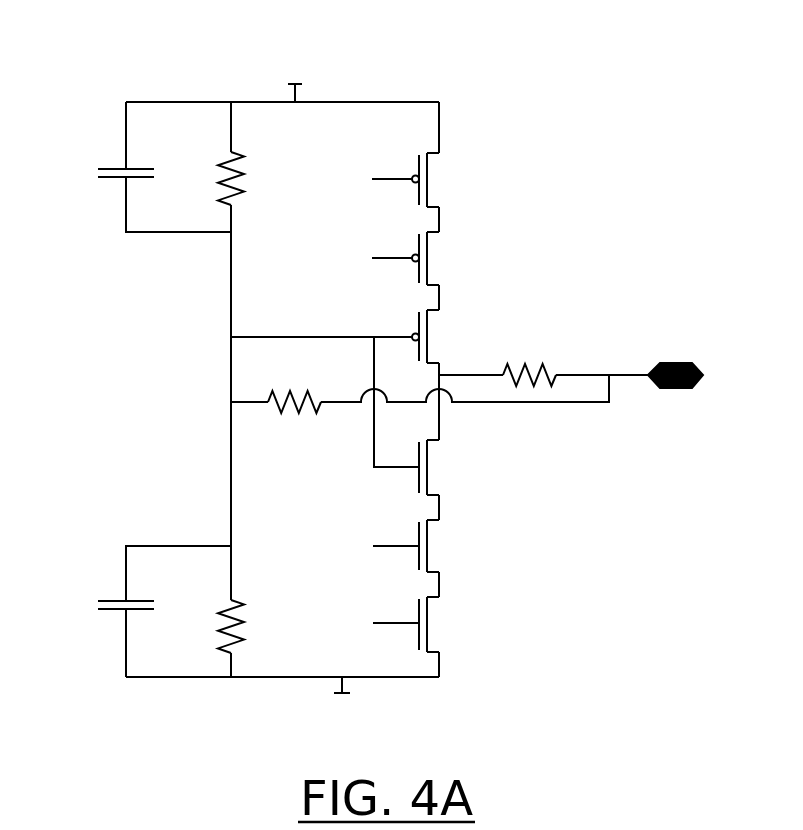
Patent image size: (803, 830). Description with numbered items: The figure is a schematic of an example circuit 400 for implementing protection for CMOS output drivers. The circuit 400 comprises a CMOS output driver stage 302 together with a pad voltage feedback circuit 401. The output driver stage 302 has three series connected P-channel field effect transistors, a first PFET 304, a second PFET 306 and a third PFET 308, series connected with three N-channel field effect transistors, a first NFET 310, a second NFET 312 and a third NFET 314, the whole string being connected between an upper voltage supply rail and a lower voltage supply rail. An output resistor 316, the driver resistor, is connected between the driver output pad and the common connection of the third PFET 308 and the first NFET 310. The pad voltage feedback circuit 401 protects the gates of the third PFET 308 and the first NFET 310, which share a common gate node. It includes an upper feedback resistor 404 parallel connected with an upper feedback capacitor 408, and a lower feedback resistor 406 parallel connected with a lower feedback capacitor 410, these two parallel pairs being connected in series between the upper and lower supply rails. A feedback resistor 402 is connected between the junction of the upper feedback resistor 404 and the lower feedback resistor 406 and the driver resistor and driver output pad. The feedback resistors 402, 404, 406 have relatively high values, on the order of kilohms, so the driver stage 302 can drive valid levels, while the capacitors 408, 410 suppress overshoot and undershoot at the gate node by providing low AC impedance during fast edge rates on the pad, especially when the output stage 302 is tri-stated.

The circuit for implementing protection for CMOS output drivers 400 is at (377, 25).
The pad voltage feedback circuit 401 is at (95, 142).
The output driver stage 302 is at (558, 168).
The PFET TP1 304 is at (394, 180).
The PFET TP2 306 is at (400, 258).
The PFET TP3 308 is at (440, 336).
The NFET TN1 310 is at (444, 467).
The NFET TN2 312 is at (402, 546).
The NFET TN3 314 is at (395, 624).
The output resistor 316 is at (543, 353).
The resistor RFB 402 is at (420, 378).
The resistor RFBU 404 is at (258, 178).
The resistor RFBD 406 is at (258, 626).
The capacitor CFBU 408 is at (164, 167).
The capacitor CFBD 410 is at (164, 611).